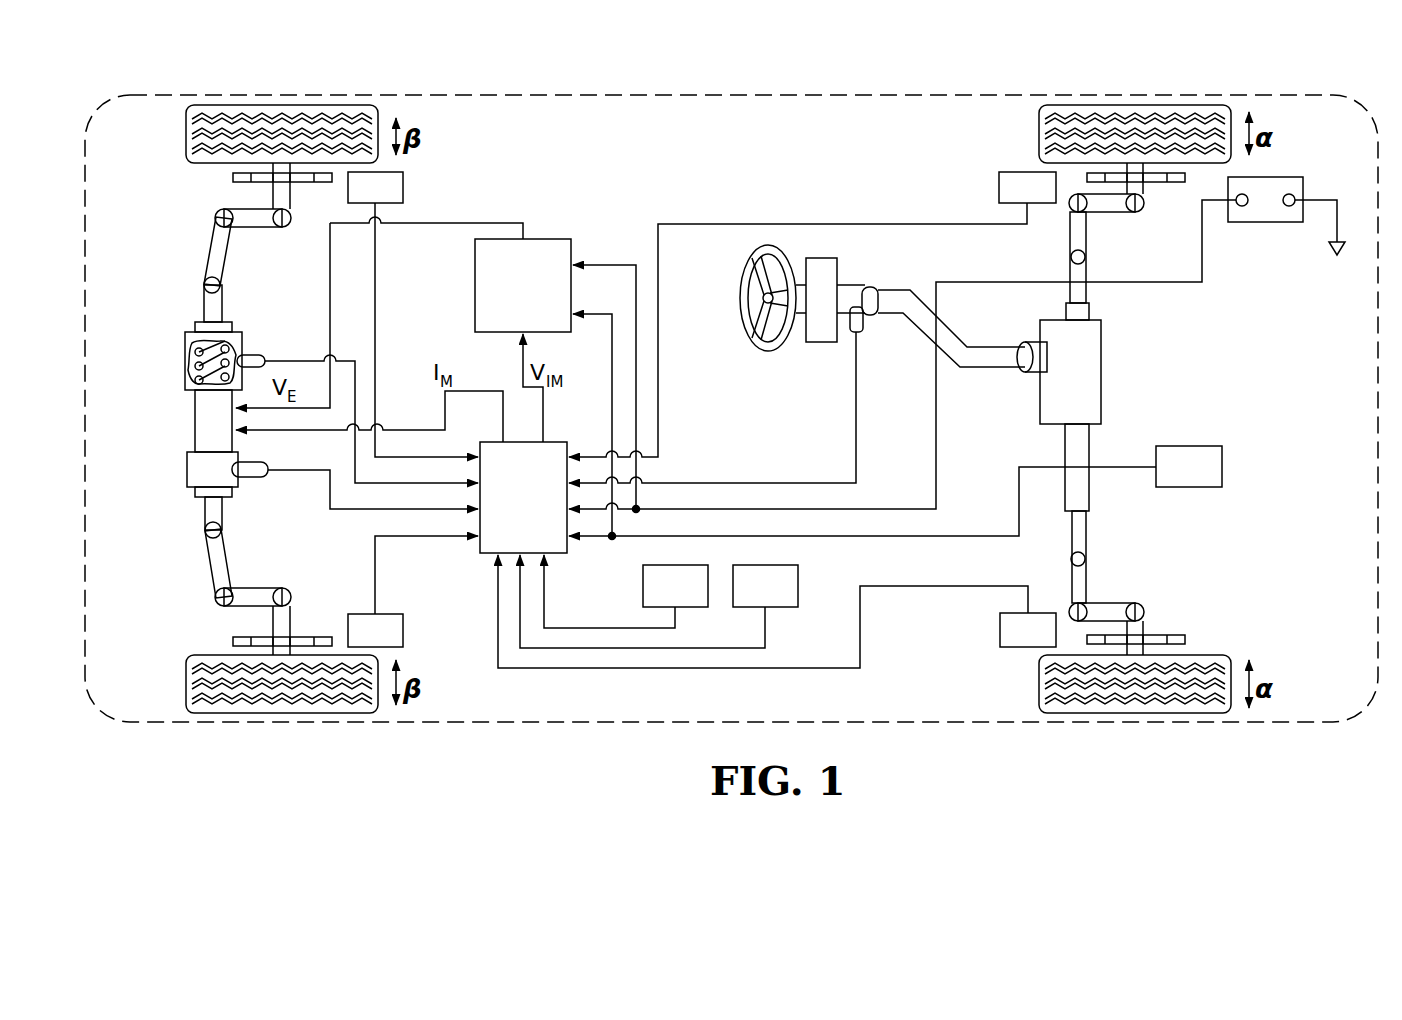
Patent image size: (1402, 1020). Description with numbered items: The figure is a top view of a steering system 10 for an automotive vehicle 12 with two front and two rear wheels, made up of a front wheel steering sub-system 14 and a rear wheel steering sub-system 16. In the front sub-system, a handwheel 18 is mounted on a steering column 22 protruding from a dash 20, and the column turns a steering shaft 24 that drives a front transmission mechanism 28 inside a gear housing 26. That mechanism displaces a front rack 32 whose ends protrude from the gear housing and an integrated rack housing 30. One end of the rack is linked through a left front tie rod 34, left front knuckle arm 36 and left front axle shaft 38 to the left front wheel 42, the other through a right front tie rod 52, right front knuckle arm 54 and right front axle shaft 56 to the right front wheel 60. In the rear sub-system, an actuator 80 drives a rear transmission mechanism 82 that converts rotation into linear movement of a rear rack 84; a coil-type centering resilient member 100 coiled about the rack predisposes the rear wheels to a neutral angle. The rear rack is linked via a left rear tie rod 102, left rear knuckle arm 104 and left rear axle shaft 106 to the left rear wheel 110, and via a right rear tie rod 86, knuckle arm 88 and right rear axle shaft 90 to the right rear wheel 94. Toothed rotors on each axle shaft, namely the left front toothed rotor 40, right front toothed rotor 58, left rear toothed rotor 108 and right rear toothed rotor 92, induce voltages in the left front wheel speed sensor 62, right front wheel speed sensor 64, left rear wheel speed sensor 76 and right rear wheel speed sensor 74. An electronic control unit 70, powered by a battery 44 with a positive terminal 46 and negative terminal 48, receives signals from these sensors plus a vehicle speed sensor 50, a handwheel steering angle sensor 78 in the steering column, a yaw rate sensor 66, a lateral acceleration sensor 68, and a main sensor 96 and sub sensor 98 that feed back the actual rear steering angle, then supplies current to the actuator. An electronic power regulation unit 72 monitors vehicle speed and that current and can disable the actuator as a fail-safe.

The steering system 10 is at (368, 44).
The automotive vehicle 12 is at (733, 92).
The front wheel steering sub-system 14 is at (748, 362).
The rear wheel steering sub-system 16 is at (625, 220).
The handwheel 18 is at (745, 287).
The dash 20 is at (820, 265).
The steering column 22 is at (866, 290).
The steering shaft 24 is at (920, 318).
The gear housing 26 is at (1045, 402).
The front transmission mechanism 28 is at (1107, 370).
The rack housing 30 is at (1072, 452).
The front rack 32 is at (1070, 272).
The left front tie rod 34 is at (1082, 235).
The left front knuckle arm 36 is at (1110, 205).
The left front axle shaft 38 is at (1140, 190).
The left front toothed rotor 40 is at (1090, 178).
The left front wheel 42 is at (1045, 130).
The battery 44 is at (1290, 175).
The positive terminal 46 is at (1242, 207).
The negative terminal 48 is at (1289, 207).
The vehicle speed sensor 50 is at (1215, 467).
The right front tie rod 52 is at (1075, 583).
The right front knuckle arm 54 is at (1108, 608).
The right front axle shaft 56 is at (1143, 627).
The right front toothed rotor 58 is at (1180, 640).
The right front wheel 60 is at (1048, 683).
The left front wheel speed sensor 62 is at (1005, 188).
The right front wheel speed sensor 64 is at (1003, 632).
The yaw rate sensor 66 is at (798, 590).
The lateral acceleration sensor 68 is at (650, 585).
The electronic control unit 70 is at (485, 548).
The electronic power regulation unit 72 is at (475, 322).
The right rear wheel speed sensor 74 is at (403, 630).
The left rear wheel speed sensor 76 is at (403, 188).
The handwheel steering angle sensor 78 is at (850, 325).
The actuator 80 is at (197, 425).
The rear transmission mechanism 82 is at (190, 468).
The rear rack 84 is at (218, 320).
The right rear tie rod 86 is at (210, 577).
The steering arm 88 is at (252, 595).
The right rear axle shaft 90 is at (285, 617).
The right rear toothed rotor 92 is at (233, 640).
The right rear wheel 94 is at (190, 690).
The main sensor 96 is at (252, 480).
The sub sensor 98 is at (258, 355).
The centering resilient member 100 is at (190, 350).
The left rear tie rod 102 is at (212, 255).
The left rear knuckle arm 104 is at (245, 225).
The left rear axle shaft 106 is at (278, 198).
The left rear toothed rotor 108 is at (233, 178).
The left rear wheel 110 is at (190, 135).